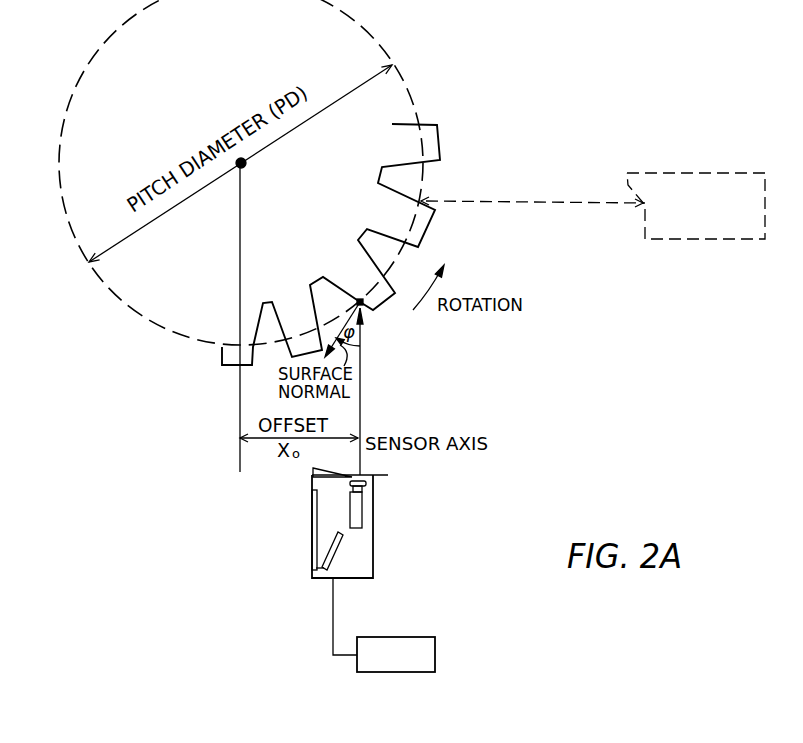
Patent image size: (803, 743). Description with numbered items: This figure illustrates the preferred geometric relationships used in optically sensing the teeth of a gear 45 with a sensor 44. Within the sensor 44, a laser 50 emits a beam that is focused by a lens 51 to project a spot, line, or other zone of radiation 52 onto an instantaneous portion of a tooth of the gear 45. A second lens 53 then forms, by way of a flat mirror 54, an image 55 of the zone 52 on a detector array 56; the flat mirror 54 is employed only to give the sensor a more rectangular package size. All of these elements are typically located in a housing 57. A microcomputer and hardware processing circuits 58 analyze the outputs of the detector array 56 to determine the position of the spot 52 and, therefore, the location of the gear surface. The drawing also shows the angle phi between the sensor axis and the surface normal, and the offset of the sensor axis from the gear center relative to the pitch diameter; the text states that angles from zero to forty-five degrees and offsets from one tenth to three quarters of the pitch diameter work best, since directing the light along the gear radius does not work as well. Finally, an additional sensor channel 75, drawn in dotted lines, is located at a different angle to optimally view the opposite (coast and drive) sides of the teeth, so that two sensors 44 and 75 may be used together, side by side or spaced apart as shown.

The gear 45 is at (416, 124).
The zone of radiation 52 is at (362, 308).
The additional sensor channel 75 is at (712, 221).
The sensor 44 is at (373, 556).
The lens 53 is at (313, 472).
The lens 51 is at (366, 484).
The laser 50 is at (362, 508).
The flat mirror 54 is at (318, 494).
The image 55 is at (328, 549).
The detector array 56 is at (318, 568).
The housing 57 is at (350, 578).
The microcomputer and hardware processing circuits 58 is at (396, 654).